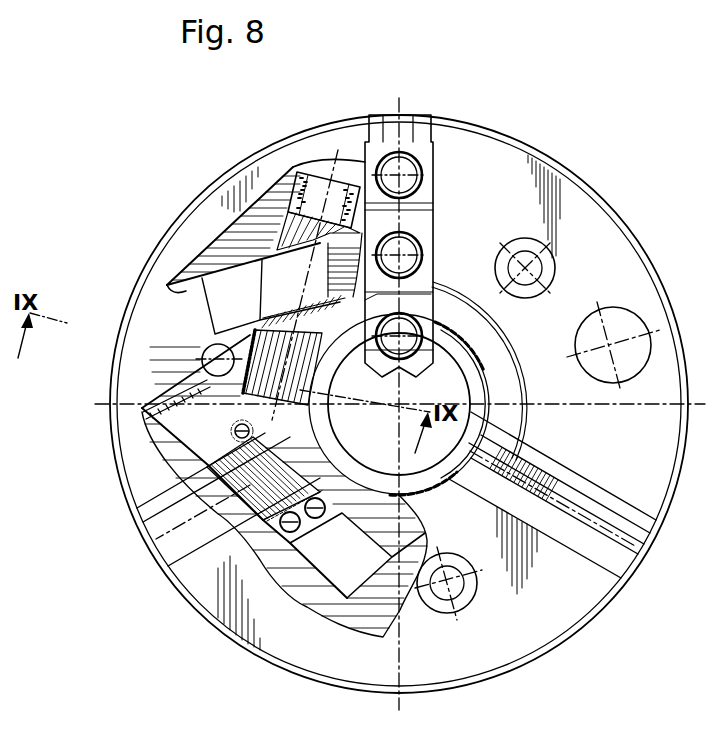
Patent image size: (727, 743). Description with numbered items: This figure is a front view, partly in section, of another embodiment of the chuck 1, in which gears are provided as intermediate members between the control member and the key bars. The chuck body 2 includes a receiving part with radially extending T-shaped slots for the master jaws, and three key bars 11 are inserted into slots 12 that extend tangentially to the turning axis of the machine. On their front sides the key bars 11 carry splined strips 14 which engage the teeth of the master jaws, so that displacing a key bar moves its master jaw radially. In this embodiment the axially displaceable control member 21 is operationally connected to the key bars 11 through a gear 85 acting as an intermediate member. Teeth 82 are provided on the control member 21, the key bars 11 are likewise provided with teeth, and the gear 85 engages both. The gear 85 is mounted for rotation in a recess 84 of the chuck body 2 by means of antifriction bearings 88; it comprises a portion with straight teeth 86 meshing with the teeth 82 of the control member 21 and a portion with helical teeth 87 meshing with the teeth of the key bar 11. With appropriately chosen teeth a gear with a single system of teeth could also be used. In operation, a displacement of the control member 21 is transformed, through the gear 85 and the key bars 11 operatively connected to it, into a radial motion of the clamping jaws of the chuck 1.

The chuck 1 is at (112, 192).
The chuck body 2 is at (210, 181).
The key bars 11 is at (273, 267).
The slots 12 is at (170, 287).
The recess 84 is at (205, 345).
The gear 85 is at (207, 375).
The antifriction bearings 88 is at (305, 213).
The helical teeth 87 is at (372, 204).
The splined strips 14 is at (430, 233).
The teeth 82 is at (477, 347).
The straight teeth 86 is at (440, 410).
The control member 21 is at (478, 387).